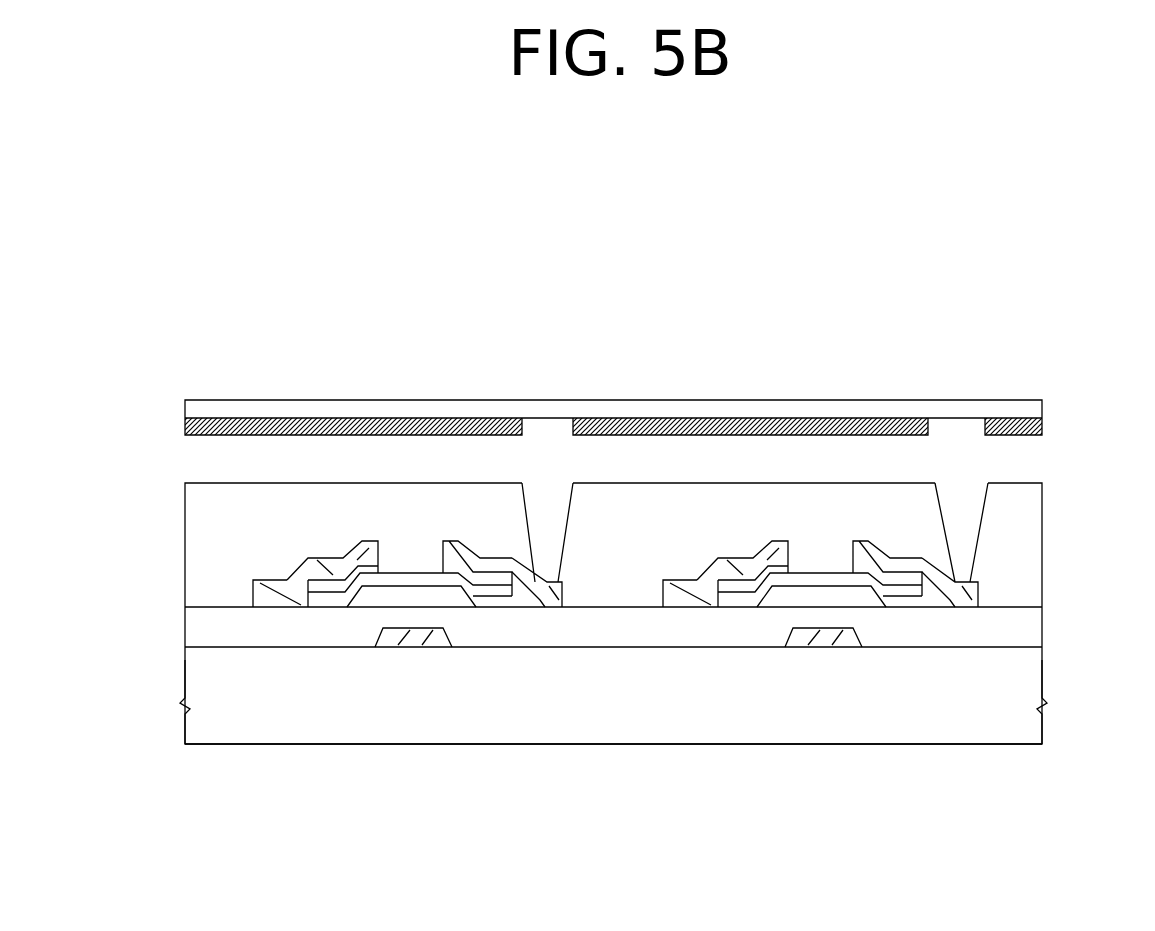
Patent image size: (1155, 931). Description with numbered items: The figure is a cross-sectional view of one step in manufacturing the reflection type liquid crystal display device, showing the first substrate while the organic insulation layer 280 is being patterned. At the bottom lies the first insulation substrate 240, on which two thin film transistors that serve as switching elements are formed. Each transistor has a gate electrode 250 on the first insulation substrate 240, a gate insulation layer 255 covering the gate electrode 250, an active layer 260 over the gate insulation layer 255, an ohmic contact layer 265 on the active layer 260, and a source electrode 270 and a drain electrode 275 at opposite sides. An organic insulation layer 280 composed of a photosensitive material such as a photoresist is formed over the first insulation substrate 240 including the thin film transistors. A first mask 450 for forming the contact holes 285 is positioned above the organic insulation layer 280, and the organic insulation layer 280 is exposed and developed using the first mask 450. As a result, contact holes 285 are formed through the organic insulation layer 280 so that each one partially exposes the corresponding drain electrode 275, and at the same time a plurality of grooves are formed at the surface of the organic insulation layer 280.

The first insulation substrate 240 is at (873, 737).
The gate electrode 250 is at (408, 647).
The gate insulation layer 255 is at (305, 637).
The active layer 260 is at (482, 600).
The ohmic contact layer 265 is at (503, 607).
The source electrode 270 is at (262, 600).
The drain electrode 275 is at (550, 607).
The organic insulation layer 280 is at (1030, 575).
The contact hole 285 is at (548, 521).
The first mask 450 is at (1002, 396).